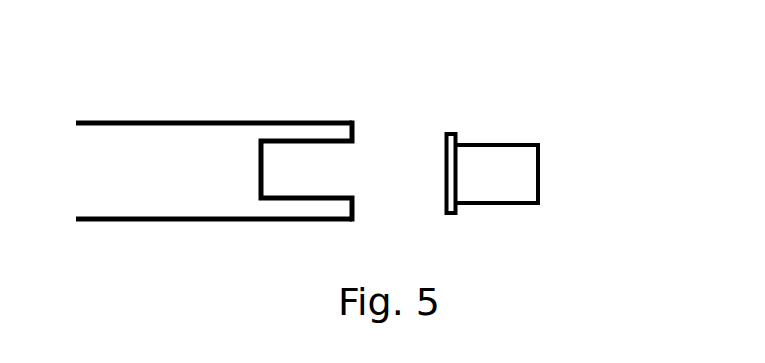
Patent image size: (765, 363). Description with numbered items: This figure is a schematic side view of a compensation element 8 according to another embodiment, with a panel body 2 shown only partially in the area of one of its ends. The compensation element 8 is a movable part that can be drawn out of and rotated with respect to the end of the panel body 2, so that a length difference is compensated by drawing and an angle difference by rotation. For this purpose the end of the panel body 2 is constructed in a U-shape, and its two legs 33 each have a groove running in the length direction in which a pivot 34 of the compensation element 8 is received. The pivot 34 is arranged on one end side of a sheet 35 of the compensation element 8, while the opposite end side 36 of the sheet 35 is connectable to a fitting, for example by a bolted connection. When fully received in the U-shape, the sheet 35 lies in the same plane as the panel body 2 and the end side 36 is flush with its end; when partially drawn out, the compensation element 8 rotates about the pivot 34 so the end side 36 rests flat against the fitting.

The panel body 2 is at (186, 153).
The legs of the U-shape 33 is at (326, 133).
The compensation element 8 is at (557, 124).
The pivot 34 is at (453, 133).
The sheet 35 is at (500, 160).
The end side 36 is at (542, 170).